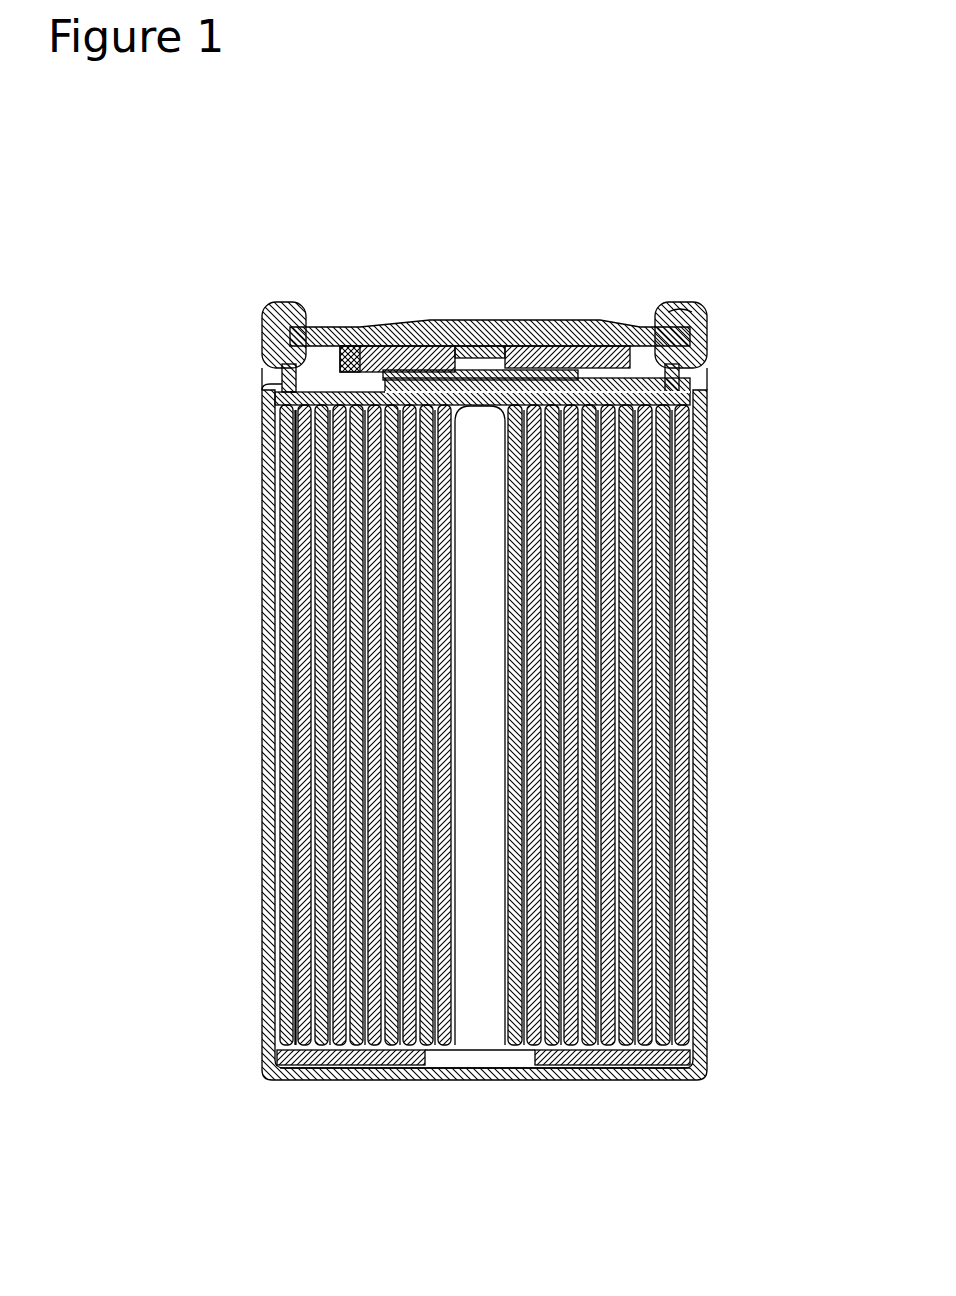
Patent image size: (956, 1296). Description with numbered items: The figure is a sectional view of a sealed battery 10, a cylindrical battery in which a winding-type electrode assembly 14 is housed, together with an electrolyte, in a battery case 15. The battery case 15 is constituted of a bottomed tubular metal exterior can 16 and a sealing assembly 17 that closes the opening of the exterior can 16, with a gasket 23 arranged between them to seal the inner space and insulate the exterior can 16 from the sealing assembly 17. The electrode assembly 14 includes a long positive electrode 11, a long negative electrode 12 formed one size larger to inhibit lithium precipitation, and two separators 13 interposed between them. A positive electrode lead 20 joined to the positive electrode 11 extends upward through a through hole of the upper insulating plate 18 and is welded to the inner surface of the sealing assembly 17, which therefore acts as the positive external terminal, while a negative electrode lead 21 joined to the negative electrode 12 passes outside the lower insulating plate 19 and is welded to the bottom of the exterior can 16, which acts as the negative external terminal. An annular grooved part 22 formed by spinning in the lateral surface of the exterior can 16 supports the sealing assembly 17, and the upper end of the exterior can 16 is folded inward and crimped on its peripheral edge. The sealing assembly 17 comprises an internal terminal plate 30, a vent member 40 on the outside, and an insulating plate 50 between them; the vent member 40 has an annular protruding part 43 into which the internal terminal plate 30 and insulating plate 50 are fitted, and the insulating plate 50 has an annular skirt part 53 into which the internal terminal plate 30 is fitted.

The sealed battery 10 is at (510, 657).
The positive electrode 11 is at (706, 632).
The negative electrode 12 is at (706, 665).
The separators 13 is at (776, 622).
The electrode assembly 14 is at (547, 725).
The battery case 15 is at (491, 283).
The exterior can 16 is at (677, 270).
The sealing assembly 17 is at (490, 304).
The insulating plate 18 is at (706, 388).
The insulating plate 19 is at (706, 1055).
The positive electrode lead 20 is at (498, 355).
The negative electrode lead 21 is at (476, 1082).
The grooved part 22 is at (264, 374).
The gasket 23 is at (707, 318).
The internal terminal plate 30 is at (418, 330).
The vent member 40 is at (463, 345).
The protruding part 43 is at (335, 332).
The insulating plate 50 is at (548, 345).
The skirt part 53 is at (352, 338).